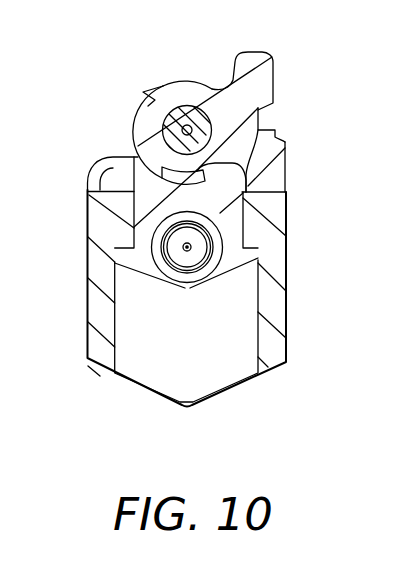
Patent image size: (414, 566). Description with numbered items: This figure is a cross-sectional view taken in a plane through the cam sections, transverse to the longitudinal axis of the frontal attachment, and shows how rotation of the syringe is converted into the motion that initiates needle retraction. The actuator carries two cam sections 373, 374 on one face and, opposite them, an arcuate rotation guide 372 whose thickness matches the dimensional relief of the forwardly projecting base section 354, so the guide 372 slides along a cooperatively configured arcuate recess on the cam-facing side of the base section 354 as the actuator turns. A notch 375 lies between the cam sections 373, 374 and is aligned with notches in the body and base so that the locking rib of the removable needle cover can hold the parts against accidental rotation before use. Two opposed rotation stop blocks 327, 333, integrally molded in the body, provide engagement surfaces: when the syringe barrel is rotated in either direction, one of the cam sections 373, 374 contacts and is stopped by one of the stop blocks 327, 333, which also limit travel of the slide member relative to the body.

The rotation stop block 327 is at (277, 200).
The rotation stop block 333 is at (100, 168).
The base section 354 is at (237, 219).
The arcuate rotation guide 372 is at (140, 122).
The cam section 373 is at (273, 165).
The cam section 374 is at (242, 58).
The notch 375 is at (270, 119).